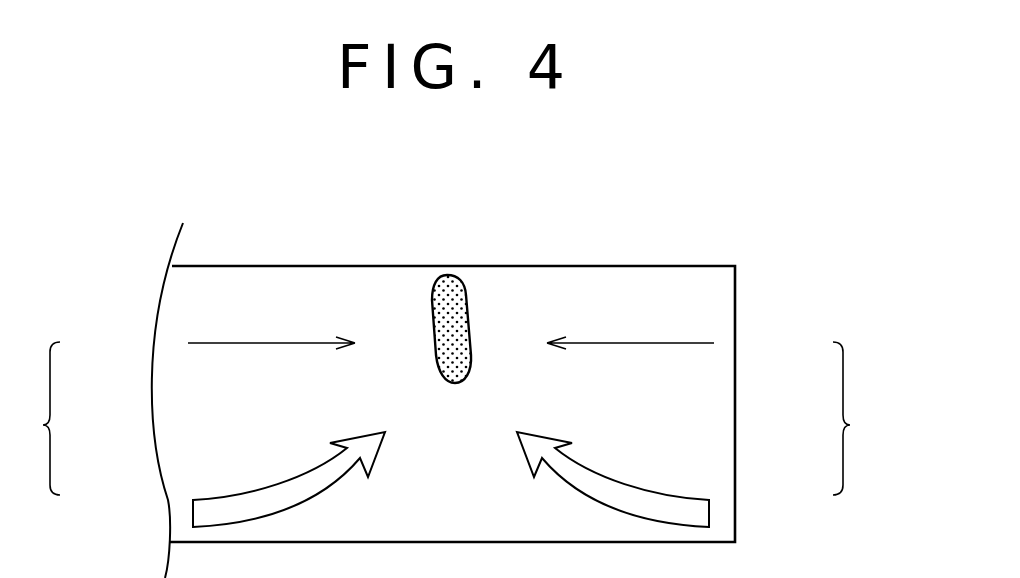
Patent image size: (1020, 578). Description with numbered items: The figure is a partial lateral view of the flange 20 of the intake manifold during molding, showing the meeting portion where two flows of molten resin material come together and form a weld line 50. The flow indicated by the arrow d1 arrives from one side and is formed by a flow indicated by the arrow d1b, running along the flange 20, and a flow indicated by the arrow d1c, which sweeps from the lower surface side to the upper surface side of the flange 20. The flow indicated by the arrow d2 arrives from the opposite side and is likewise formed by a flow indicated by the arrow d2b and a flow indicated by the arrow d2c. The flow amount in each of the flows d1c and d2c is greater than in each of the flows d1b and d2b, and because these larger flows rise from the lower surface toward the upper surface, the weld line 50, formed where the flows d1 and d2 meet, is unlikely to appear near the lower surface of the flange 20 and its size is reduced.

The flange 20 is at (362, 266).
The weld line 50 is at (470, 300).
The arrow d2 (flow of molten resin material) d2 is at (33, 418).
The arrow d2b (flow of molten resin material) d2b is at (212, 343).
The arrow d2c (flow of molten resin material) d2c is at (213, 498).
The arrow d1 (flow of molten resin material) d1 is at (860, 418).
The arrow d1b (flow of molten resin material) d1b is at (690, 343).
The arrow d1c (flow of molten resin material) d1c is at (689, 498).